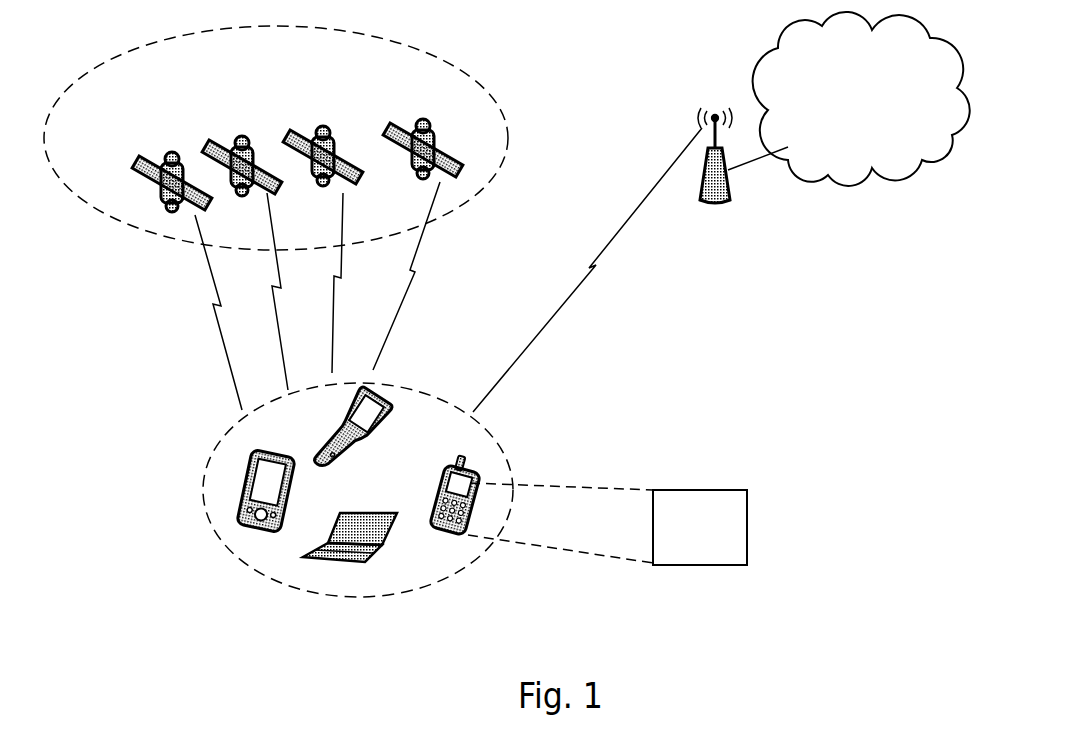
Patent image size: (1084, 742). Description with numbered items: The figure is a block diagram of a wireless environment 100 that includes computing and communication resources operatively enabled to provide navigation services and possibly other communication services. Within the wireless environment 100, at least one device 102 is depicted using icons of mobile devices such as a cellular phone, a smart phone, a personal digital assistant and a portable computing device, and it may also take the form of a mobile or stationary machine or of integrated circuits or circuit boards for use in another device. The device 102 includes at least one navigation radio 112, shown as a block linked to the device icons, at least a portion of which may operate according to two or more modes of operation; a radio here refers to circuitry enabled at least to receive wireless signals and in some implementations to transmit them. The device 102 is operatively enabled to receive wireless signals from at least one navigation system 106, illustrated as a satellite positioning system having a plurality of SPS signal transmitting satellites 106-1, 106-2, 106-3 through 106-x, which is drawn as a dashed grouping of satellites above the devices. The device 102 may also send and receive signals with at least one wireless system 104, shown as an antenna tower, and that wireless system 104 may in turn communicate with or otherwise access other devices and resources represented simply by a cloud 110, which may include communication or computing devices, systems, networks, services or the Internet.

The wireless environment 100 is at (683, 449).
The device 102 is at (360, 597).
The wireless system 104 is at (708, 207).
The navigation system 106 is at (170, 238).
The SPS signal transmitting satellite 106-1 is at (170, 157).
The SPS signal transmitting satellite 106-2 is at (237, 140).
The SPS signal transmitting satellite 106-3 is at (317, 132).
The SPS signal transmitting satellite 106-x is at (418, 127).
The cloud 110 is at (847, 177).
The navigation radio 112 is at (720, 536).